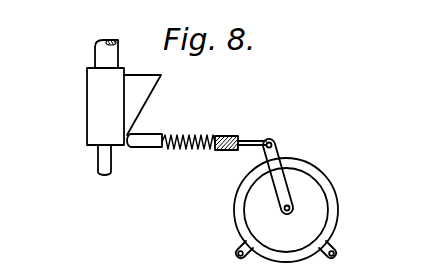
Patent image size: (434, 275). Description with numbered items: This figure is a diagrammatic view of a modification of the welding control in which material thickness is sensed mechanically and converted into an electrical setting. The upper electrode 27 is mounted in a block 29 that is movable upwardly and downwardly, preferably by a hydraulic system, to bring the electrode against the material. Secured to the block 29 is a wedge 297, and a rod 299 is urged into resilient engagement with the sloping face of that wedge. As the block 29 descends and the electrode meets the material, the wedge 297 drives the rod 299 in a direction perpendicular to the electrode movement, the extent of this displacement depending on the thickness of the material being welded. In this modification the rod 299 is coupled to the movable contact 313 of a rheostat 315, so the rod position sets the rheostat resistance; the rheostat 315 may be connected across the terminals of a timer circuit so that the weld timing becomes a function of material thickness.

The block 29 is at (92, 108).
The upper electrode 27 is at (101, 163).
The wedge 297 is at (142, 91).
The rod 299 is at (154, 148).
The movable contact 313 is at (278, 157).
The rheostat 315 is at (328, 188).